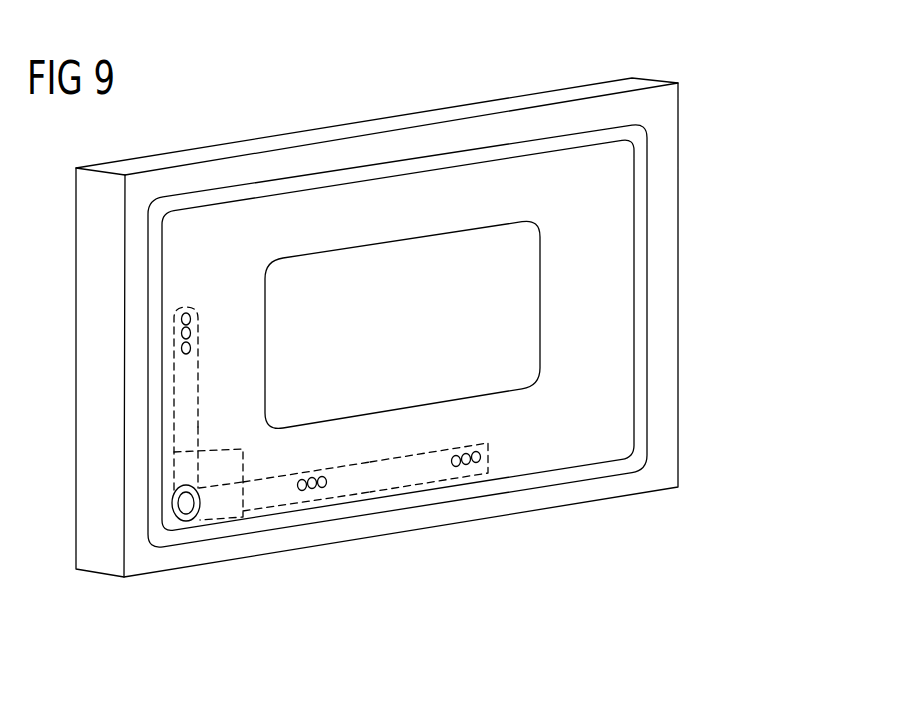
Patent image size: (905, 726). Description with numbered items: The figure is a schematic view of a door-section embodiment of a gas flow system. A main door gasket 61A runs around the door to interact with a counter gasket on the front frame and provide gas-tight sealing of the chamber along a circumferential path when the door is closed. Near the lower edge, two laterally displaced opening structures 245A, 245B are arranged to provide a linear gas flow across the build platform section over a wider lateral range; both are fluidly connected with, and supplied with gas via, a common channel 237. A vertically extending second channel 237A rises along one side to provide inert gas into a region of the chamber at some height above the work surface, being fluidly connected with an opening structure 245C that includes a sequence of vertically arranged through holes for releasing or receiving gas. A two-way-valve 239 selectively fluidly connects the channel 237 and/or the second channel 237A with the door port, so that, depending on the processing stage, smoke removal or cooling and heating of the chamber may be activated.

The main door gasket 61A is at (640, 276).
The opening structure 245C is at (196, 307).
The second channel 237A is at (200, 427).
The two-way-valve 239 is at (214, 465).
The common channel 237 is at (260, 502).
The opening structure 245A is at (331, 497).
The opening structure 245B is at (482, 470).